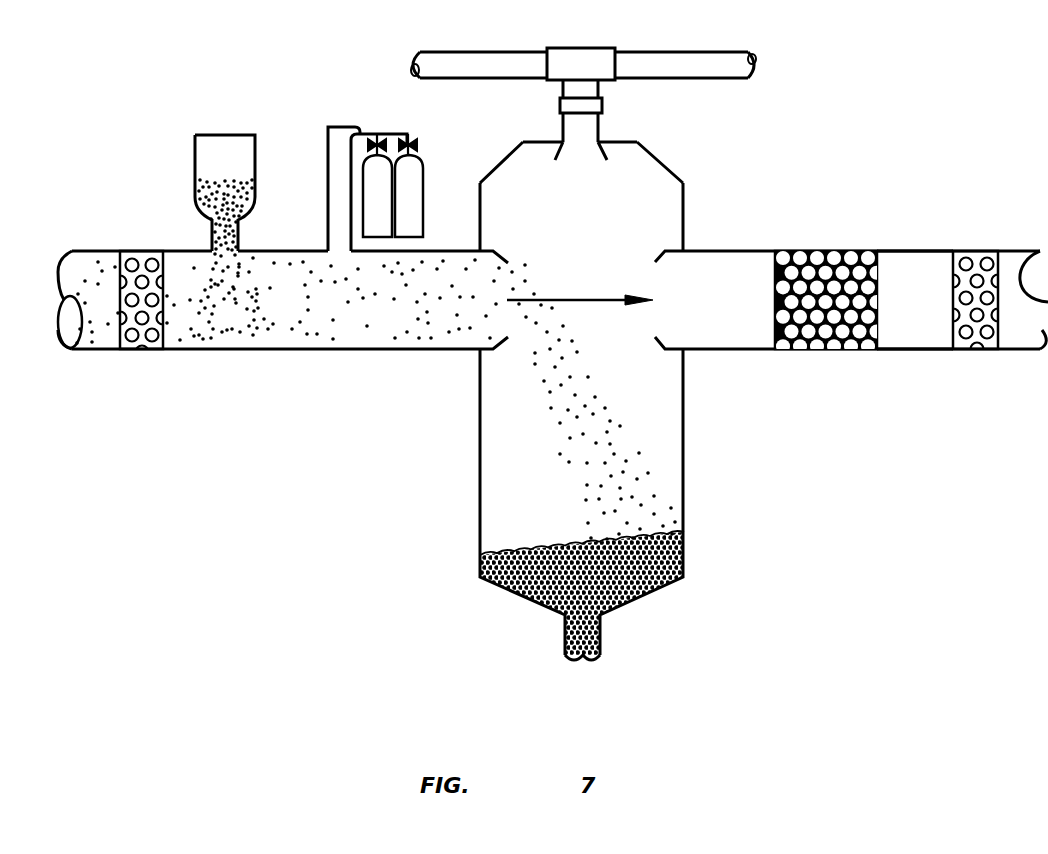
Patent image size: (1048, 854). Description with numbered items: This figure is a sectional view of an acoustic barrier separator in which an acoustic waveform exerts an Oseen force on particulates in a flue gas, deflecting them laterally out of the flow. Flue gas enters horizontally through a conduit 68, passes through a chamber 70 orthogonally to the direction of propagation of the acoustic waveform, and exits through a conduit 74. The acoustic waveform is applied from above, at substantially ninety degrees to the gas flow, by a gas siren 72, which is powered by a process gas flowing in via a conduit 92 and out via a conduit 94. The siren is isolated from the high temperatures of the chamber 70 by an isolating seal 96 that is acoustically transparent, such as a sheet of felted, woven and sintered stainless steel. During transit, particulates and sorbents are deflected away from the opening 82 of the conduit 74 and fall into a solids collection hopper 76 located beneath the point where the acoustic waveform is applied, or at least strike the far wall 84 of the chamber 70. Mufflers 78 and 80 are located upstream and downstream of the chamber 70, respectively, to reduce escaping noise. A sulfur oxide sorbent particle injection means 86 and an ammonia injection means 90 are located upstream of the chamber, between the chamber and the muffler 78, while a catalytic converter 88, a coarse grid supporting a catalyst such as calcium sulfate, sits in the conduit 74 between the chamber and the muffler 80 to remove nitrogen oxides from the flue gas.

The conduit 68 is at (355, 350).
The chamber 70 is at (480, 445).
The gas siren 72 is at (582, 48).
The conduit 74 is at (908, 251).
The solids collection hopper 76 is at (528, 596).
The muffler 78 is at (140, 350).
The muffler 80 is at (975, 349).
The opening 82 is at (657, 262).
The far wall 84 is at (683, 388).
The sulfur oxide sorbent particle injection means 86 is at (222, 134).
The catalytic converter 88 is at (822, 251).
The ammonia injection means 90 is at (424, 172).
The conduit 92 is at (668, 52).
The conduit 94 is at (470, 50).
The isolating seal 96 is at (602, 105).